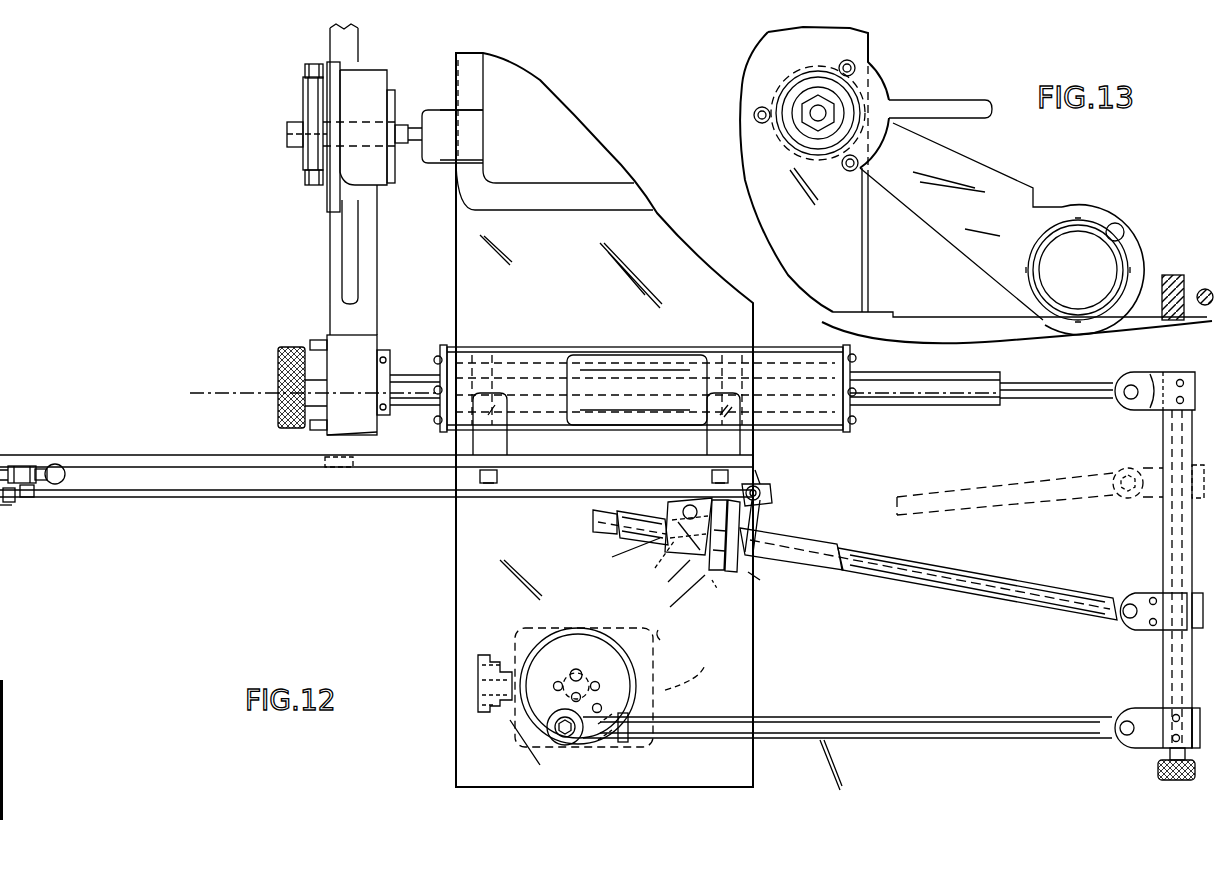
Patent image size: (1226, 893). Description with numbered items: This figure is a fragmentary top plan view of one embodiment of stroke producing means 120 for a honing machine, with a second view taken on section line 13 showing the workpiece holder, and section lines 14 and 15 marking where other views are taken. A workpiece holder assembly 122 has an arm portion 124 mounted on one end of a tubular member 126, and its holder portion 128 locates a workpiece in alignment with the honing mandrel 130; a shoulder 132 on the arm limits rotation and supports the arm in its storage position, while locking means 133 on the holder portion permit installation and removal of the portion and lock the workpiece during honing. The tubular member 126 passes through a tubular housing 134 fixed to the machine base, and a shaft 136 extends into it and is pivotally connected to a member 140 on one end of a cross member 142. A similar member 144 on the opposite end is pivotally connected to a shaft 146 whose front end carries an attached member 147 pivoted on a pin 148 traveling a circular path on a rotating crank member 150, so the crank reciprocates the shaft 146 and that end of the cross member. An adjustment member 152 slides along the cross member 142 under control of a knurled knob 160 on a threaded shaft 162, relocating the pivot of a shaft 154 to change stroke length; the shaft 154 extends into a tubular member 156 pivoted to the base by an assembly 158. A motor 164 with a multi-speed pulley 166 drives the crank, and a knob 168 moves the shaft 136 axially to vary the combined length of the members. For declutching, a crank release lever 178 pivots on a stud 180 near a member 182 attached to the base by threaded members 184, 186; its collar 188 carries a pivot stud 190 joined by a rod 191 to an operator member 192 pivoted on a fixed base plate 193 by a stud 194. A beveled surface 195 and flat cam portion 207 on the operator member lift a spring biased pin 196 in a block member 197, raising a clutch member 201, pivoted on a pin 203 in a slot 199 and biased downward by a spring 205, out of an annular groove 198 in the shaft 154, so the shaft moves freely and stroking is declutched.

In FIG. 12, the section line 13— 13 is at (186, 531).
In FIG. 12, the section line 14— 14 is at (1093, 800).
In FIG. 12, the section line 15— 15 is at (885, 385).
In FIG. 12, the stroke producing means 120 is at (444, 615).
In FIG. 12, the workpiece holder assembly 122 is at (377, 263).
In FIG. 12, the arm portion 124 is at (378, 305).
In FIG. 13, the arm portion 124 is at (965, 162).
In FIG. 12, the tubular member 126 is at (930, 395).
In FIG. 12, the holder portion 128 is at (398, 162).
In FIG. 13, the holder portion 128 is at (870, 70).
In FIG. 12, the honing mandrel 130 is at (412, 125).
In FIG. 13, the shoulder 132 is at (1036, 193).
In FIG. 12, the locking means 133 is at (310, 188).
In FIG. 12, the tubular housing 134 is at (517, 345).
In FIG. 12, the shaft 136 is at (1025, 398).
In FIG. 12, the member 140 is at (1158, 372).
In FIG. 12, the cross member 142 is at (1165, 435).
In FIG. 12, the member 144 is at (1150, 708).
In FIG. 12, the shaft 146 is at (910, 697).
In FIG. 12, the attached member 147 is at (618, 742).
In FIG. 12, the pin or stud 148 is at (565, 735).
In FIG. 12, the crank member 150 is at (578, 630).
In FIG. 12, the stroke length adjustment member 152 is at (1148, 592).
In FIG. 12, the shaft 154 is at (940, 567).
In FIG. 12, the tubular member 156 is at (770, 520).
In FIG. 12, the pivot assembly 158 is at (725, 580).
In FIG. 12, the knurled knob 160 is at (1178, 782).
In FIG. 12, the threaded shaft 162 is at (1168, 762).
In FIG. 12, the motor 164 is at (697, 666).
In FIG. 12, the multi-speed pulley 166 is at (456, 708).
In FIG. 12, the knob 168 is at (280, 393).
In FIG. 13, the knob 168 is at (1043, 283).
In FIG. 12, the crank release lever 178 is at (48, 470).
In FIG. 12, the stud 180 is at (36, 495).
In FIG. 12, the member 182 is at (130, 440).
In FIG. 13, the member 182 is at (1172, 275).
In FIG. 12, the threaded member 184 is at (500, 477).
In FIG. 12, the threaded member 186 is at (770, 488).
In FIG. 12, the collar 188 is at (8, 466).
In FIG. 12, the pivot stud 190 is at (15, 500).
In FIG. 12, the rod 191 is at (330, 499).
In FIG. 13, the rod 191 is at (1205, 289).
In FIG. 12, the operator member 192 is at (762, 490).
In FIG. 12, the fixed base plate 193 is at (753, 637).
In FIG. 12, the stud 194 is at (765, 535).
In FIG. 12, the beveled surface portion 195 is at (735, 590).
In FIG. 12, the spring biased pin 196 is at (661, 577).
In FIG. 12, the block member 197 is at (623, 551).
In FIG. 12, the annular groove 198 is at (643, 559).
In FIG. 12, the slot 199 is at (630, 512).
In FIG. 12, the clutch member 201 is at (674, 596).
In FIG. 12, the pin 203 is at (781, 462).
In FIG. 12, the spring 205 is at (677, 636).
In FIG. 12, the flat cam portion 207 is at (774, 585).